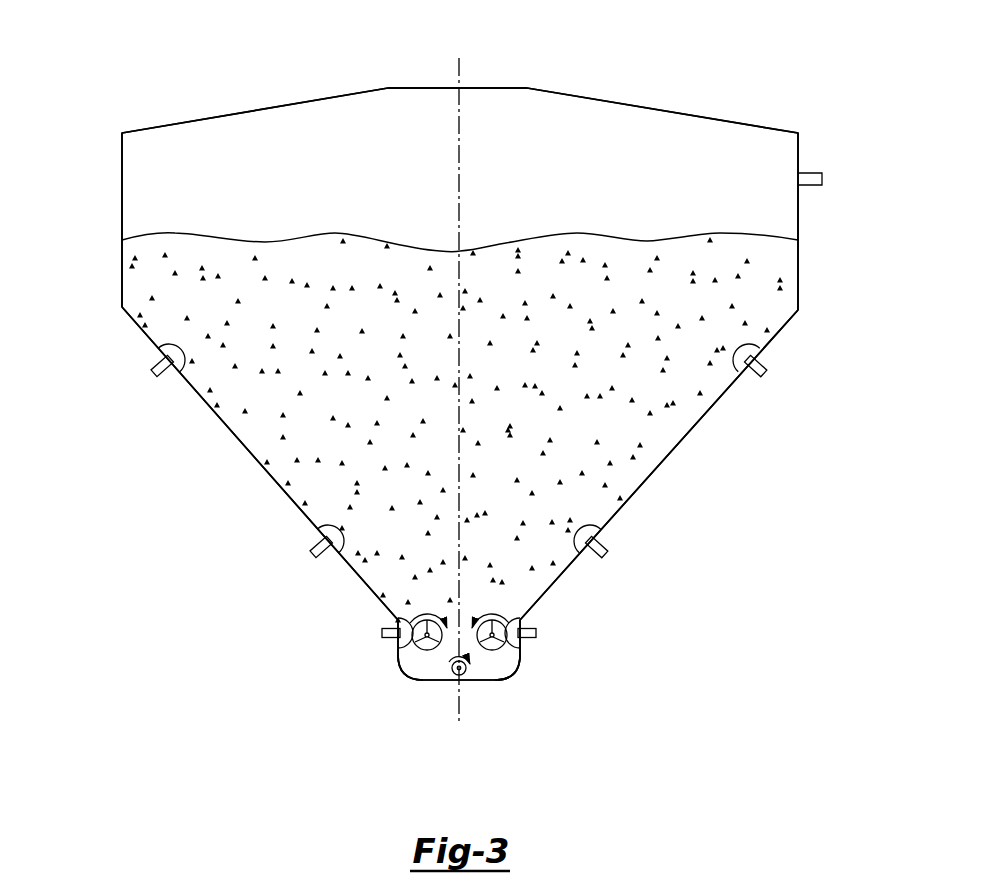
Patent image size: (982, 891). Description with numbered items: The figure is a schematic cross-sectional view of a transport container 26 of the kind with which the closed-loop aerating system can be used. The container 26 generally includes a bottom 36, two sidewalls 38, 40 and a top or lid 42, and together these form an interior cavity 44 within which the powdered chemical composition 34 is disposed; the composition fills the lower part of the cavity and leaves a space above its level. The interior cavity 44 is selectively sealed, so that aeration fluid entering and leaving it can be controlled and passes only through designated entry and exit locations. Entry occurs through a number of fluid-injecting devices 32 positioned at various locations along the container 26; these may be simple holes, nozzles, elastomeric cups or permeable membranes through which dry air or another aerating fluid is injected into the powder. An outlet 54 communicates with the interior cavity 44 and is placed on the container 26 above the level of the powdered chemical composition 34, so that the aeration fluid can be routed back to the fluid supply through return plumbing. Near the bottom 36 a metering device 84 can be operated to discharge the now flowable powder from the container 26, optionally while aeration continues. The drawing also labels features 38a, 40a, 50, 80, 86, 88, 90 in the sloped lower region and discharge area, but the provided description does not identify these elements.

The container 26 is at (696, 107).
The fluid-injecting device 32 is at (151, 382).
The powdered chemical composition 34 is at (250, 398).
The bottom 36 is at (468, 682).
The sidewall 38 is at (122, 272).
The first sloped wall 38a is at (272, 478).
The sidewall 40 is at (798, 272).
The second sloped wall 40a is at (646, 478).
The top or lid 42 is at (222, 116).
The interior cavity 44 is at (527, 110).
The second portion of particulate material 50 is at (675, 398).
The outlet 54 is at (814, 172).
The trough portion 80 is at (513, 688).
The metering device 84 is at (389, 688).
The discharge auger 86 is at (455, 672).
The first auger 88 is at (422, 649).
The second auger 90 is at (497, 649).